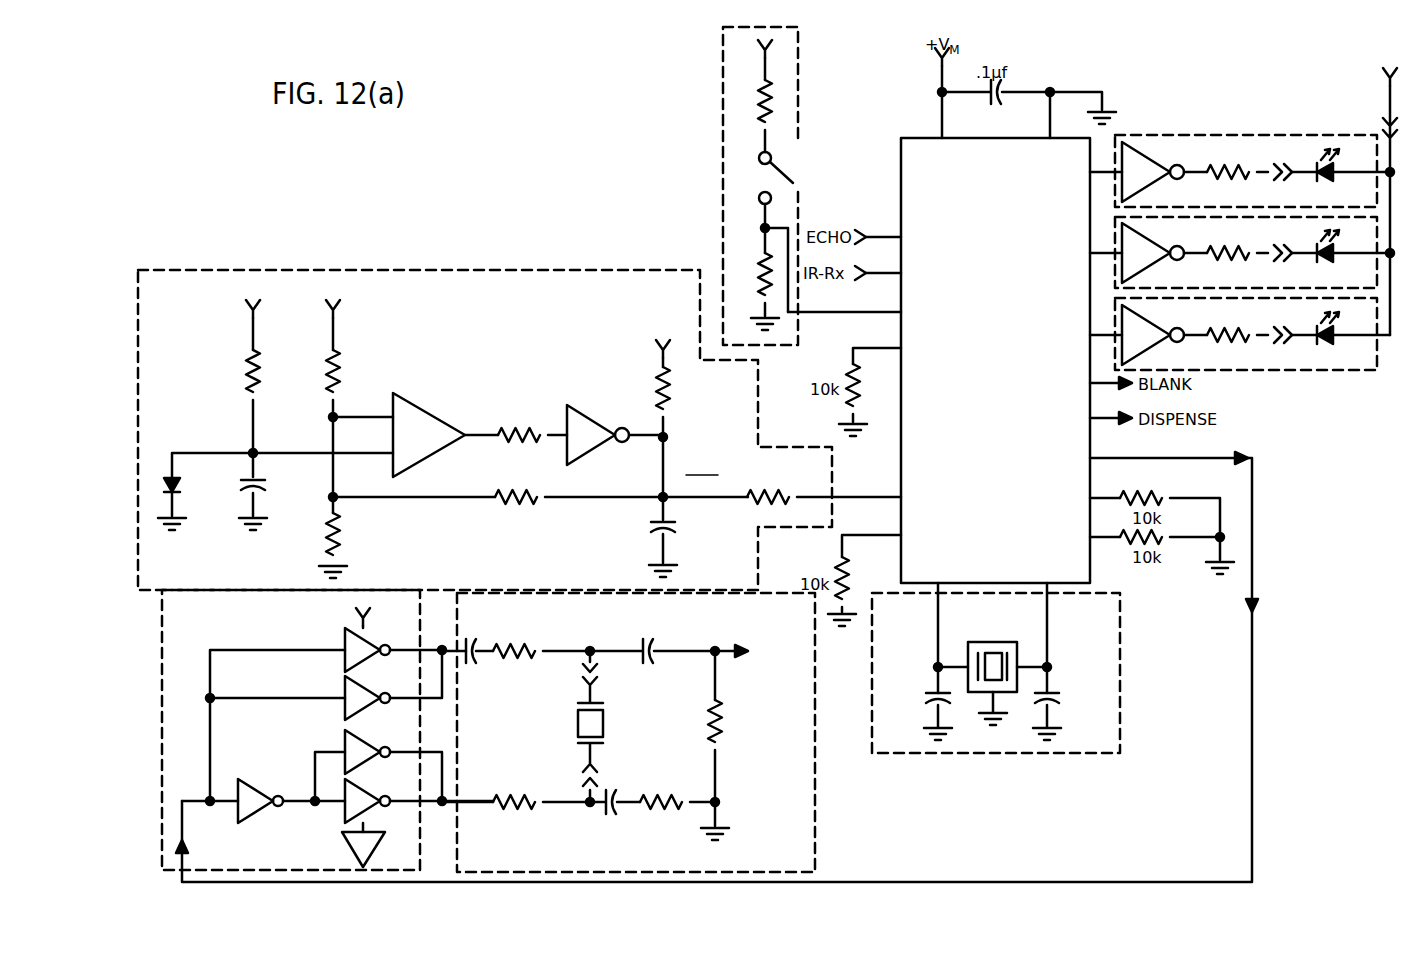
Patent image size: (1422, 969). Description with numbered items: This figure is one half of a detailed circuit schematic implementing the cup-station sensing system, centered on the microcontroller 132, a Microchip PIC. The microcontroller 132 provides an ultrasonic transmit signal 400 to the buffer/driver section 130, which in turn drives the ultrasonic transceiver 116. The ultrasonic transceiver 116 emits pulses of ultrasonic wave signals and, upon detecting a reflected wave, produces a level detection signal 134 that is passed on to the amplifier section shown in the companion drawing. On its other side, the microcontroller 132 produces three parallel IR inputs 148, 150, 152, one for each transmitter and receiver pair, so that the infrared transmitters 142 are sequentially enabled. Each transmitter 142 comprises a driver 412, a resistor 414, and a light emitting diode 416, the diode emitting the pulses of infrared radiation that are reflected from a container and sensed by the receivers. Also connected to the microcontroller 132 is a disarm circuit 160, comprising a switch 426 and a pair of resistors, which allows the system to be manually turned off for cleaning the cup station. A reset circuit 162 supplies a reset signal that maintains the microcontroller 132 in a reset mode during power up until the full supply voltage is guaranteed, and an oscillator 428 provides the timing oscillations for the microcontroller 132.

The ultrasonic transceiver 116 is at (671, 732).
The buffer/driver 130 is at (162, 682).
The microcontroller 132 is at (1012, 518).
The level detection signal 134 is at (734, 660).
The transmitter 142 is at (1223, 135).
The parallel IR input 148 is at (1112, 172).
The parallel IR input 150 is at (1113, 253).
The parallel IR input 152 is at (1240, 337).
The disarm circuit 160 is at (752, 186).
The reset circuit 162 is at (258, 270).
The ultrasonic transmit signal 400 is at (1252, 528).
The driver 412 is at (1146, 326).
The resistor 414 is at (1229, 343).
The light emitting diode 416 is at (1327, 343).
The switch 426 is at (758, 156).
The oscillator 428 is at (1120, 688).